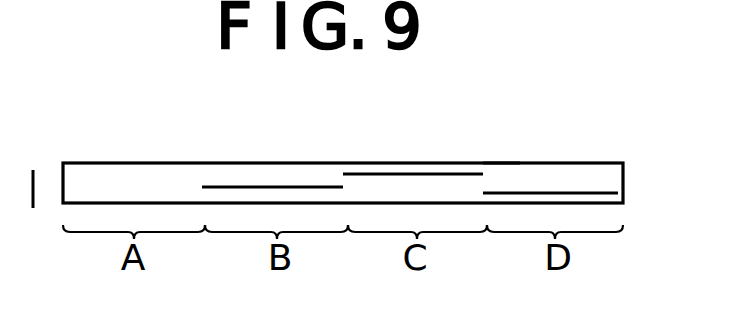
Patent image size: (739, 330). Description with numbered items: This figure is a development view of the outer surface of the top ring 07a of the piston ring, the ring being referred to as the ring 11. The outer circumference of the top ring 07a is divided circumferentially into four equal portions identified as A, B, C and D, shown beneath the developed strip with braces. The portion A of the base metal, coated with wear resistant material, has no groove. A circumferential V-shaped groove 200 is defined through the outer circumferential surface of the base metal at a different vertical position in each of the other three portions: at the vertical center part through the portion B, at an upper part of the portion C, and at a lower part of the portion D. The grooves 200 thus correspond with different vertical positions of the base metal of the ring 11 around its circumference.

The ring II 11 is at (100, 111).
The groove 200 is at (284, 186).
The top ring 07a is at (500, 162).